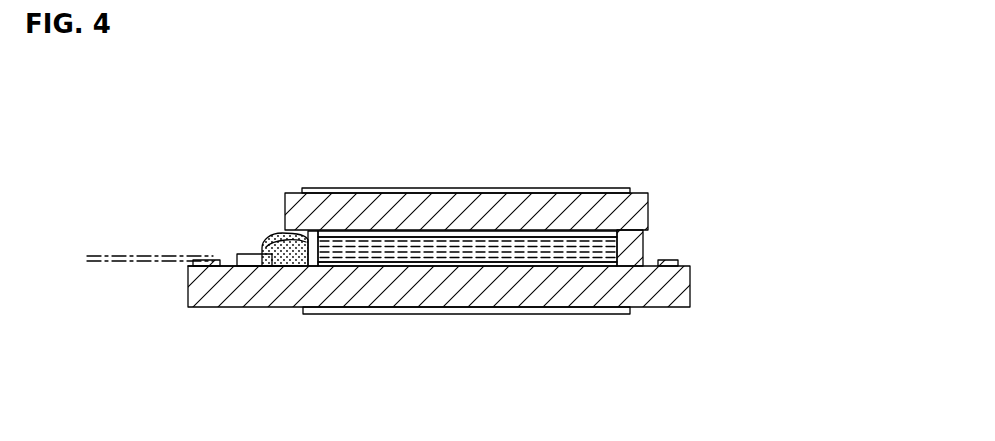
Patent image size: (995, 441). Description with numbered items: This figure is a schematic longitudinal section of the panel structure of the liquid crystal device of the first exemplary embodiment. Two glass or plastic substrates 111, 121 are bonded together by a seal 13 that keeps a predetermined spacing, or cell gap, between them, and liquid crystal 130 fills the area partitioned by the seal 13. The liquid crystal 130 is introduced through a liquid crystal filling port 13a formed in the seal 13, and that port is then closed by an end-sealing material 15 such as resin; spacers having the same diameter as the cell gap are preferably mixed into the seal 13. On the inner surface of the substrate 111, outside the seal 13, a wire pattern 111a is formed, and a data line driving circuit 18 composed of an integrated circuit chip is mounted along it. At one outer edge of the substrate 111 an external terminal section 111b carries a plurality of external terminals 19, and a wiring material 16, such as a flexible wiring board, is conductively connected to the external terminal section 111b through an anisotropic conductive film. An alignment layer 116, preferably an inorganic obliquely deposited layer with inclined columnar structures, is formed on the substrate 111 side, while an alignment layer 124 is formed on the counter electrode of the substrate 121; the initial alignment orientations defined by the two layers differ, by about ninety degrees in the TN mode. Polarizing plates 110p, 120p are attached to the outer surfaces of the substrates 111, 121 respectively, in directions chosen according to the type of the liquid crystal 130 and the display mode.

The substrate 111 is at (347, 310).
The wire pattern 111a is at (668, 260).
The external terminal section 111b is at (228, 264).
The polarizing plate 110p is at (463, 314).
The substrate 121 is at (347, 190).
The polarizing plate 120p is at (523, 189).
The alignment layer 124 is at (437, 247).
The seal 13 is at (643, 245).
The liquid crystal filling port 13a is at (265, 237).
The end-sealing material 15 is at (291, 258).
The wiring material 16 is at (123, 262).
The data line driving circuit 18 is at (255, 253).
The external terminals 19 is at (207, 260).
The alignment layer 116 is at (392, 264).
The liquid crystal 130 is at (537, 252).